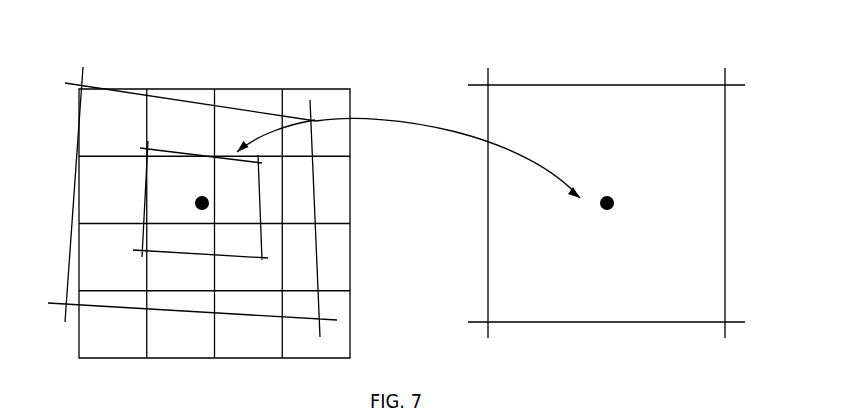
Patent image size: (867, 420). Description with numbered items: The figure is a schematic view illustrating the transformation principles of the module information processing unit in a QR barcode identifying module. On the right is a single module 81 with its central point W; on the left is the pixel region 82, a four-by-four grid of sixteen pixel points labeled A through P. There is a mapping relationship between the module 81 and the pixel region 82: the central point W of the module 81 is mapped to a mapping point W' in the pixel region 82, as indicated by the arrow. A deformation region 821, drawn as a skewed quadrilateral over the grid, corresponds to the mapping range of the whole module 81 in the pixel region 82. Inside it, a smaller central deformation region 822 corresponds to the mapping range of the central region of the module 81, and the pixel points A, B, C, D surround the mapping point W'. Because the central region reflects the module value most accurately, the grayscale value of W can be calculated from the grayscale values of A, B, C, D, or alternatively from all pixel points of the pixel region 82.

The module 81 is at (540, 85).
The pixel region 82 is at (167, 88).
The deformation region 821 is at (313, 172).
The central deformation region 822 is at (260, 235).